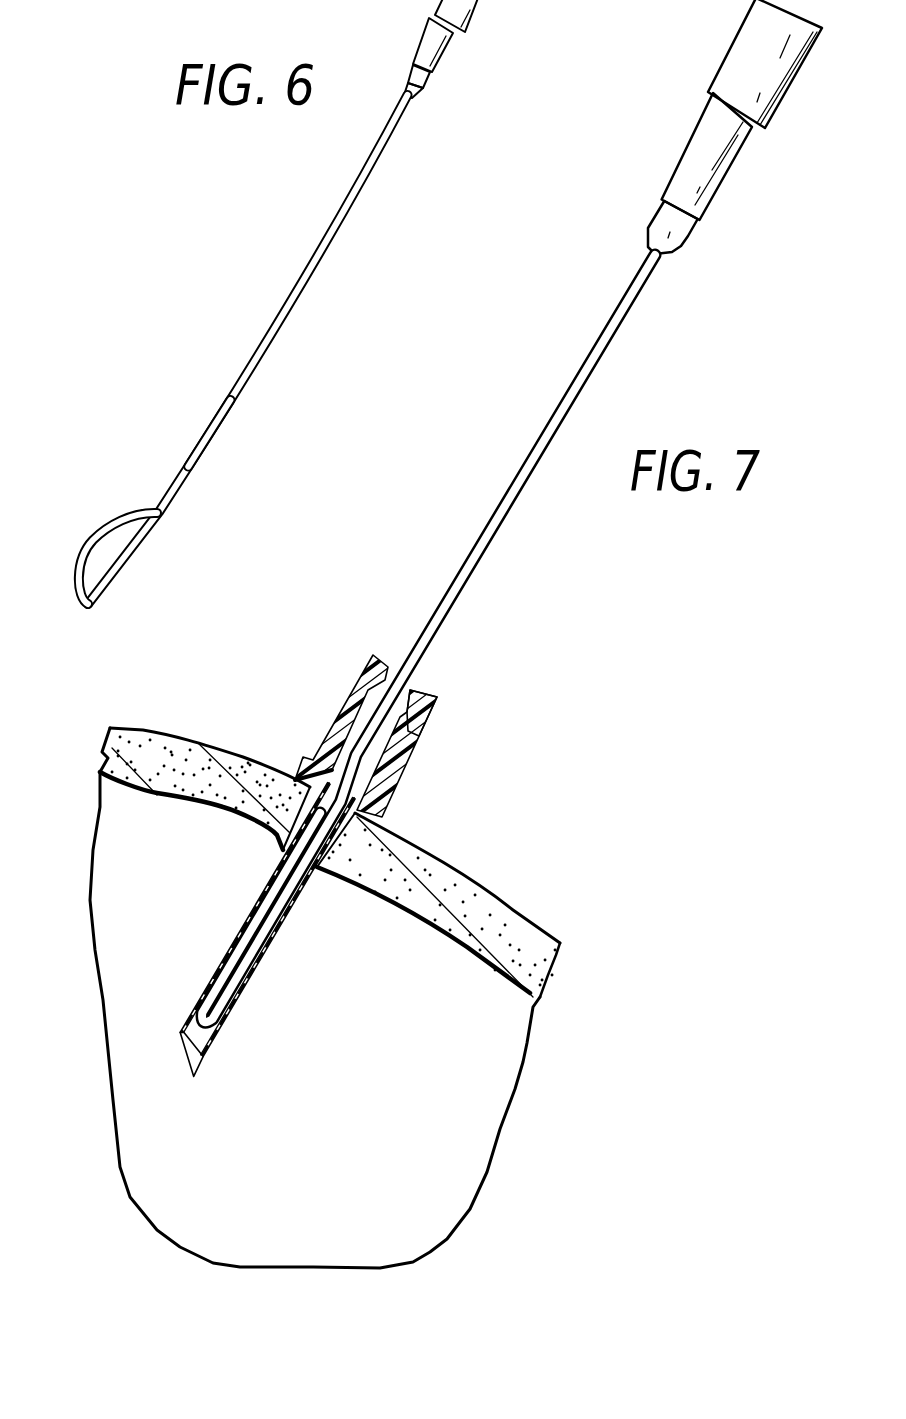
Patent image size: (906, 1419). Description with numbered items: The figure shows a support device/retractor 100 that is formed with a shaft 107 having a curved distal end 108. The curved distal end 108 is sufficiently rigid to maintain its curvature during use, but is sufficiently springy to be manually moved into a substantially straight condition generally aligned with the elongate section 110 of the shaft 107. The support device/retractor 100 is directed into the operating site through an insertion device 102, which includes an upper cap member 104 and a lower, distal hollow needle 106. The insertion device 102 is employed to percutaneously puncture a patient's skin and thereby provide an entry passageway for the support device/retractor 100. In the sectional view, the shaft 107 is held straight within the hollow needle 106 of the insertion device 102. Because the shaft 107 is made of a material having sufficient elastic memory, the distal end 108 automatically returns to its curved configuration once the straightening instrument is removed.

In FIG. 6, the support device/retractor 100 is at (246, 302).
In FIG. 6, the shaft 107 is at (315, 275).
In FIG. 7, the shaft 107 is at (468, 590).
In FIG. 6, the elongate section 110 is at (210, 440).
In FIG. 6, the curved distal end 108 is at (95, 530).
In FIG. 7, the upper cap member 104 is at (410, 750).
In FIG. 7, the insertion device 102 is at (395, 805).
In FIG. 7, the hollow needle 106 is at (243, 997).